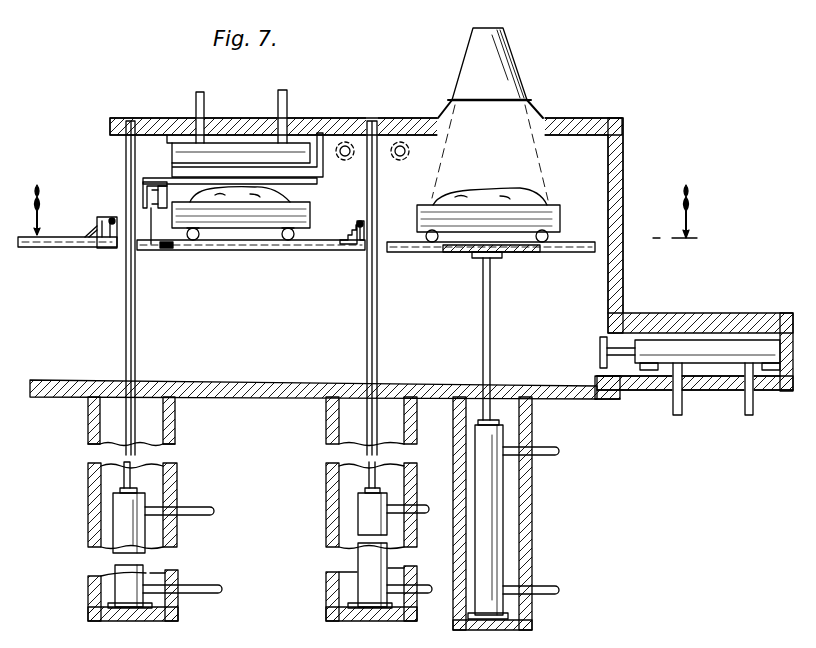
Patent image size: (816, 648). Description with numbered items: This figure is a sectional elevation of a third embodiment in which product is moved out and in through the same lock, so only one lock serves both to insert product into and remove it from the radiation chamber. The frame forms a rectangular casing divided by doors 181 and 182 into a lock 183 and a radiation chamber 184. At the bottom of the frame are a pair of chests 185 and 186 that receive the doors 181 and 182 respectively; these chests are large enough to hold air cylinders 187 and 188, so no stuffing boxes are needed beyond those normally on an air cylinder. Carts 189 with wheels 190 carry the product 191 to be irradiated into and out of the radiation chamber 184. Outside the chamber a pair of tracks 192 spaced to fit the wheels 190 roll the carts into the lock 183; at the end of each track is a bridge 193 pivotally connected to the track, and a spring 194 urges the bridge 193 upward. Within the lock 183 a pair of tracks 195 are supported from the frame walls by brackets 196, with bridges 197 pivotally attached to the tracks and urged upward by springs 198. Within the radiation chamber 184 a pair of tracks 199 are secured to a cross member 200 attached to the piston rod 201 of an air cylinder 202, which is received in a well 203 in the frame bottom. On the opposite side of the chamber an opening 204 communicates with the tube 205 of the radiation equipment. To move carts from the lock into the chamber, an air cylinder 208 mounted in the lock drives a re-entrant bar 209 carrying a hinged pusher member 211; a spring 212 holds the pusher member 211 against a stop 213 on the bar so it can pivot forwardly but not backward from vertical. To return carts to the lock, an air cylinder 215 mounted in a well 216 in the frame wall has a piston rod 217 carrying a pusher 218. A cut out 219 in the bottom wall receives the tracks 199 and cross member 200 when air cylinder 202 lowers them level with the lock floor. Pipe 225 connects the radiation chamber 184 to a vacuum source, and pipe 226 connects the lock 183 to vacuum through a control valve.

The door 181 is at (136, 340).
The door 182 is at (378, 340).
The lock 183 is at (284, 357).
The radiation chamber 184 is at (547, 302).
The chest 185 is at (176, 490).
The chest 186 is at (356, 505).
The air cylinder 187 is at (113, 528).
The air cylinder 188 is at (360, 581).
The cart 189 is at (590, 196).
The wheels 190 is at (310, 250).
The product 191 is at (290, 195).
The track 192 is at (40, 248).
The bridge 193 is at (100, 228).
The spring 194 is at (100, 248).
The track 195 is at (250, 250).
The bracket 196 is at (165, 247).
The bridge 197 is at (362, 226).
The spring 198 is at (345, 232).
The track 199 is at (580, 255).
The cross member 200 is at (470, 255).
The piston rod 201 is at (483, 297).
The air cylinder 202 is at (503, 515).
The well 203 is at (532, 542).
The opening 204 is at (535, 110).
The tube 205 is at (505, 52).
The air cylinder 208 is at (200, 120).
The re-entrant bar 209 is at (220, 178).
The hinged pusher member 211 is at (158, 198).
The spring 212 is at (160, 245).
The stop 213 is at (145, 185).
The air cylinder 215 is at (748, 340).
The well 216 is at (690, 340).
The piston rod 217 is at (622, 392).
The pusher 218 is at (600, 340).
The cut out 219 is at (590, 380).
The pipe 225 is at (404, 140).
The pipe 226 is at (345, 140).